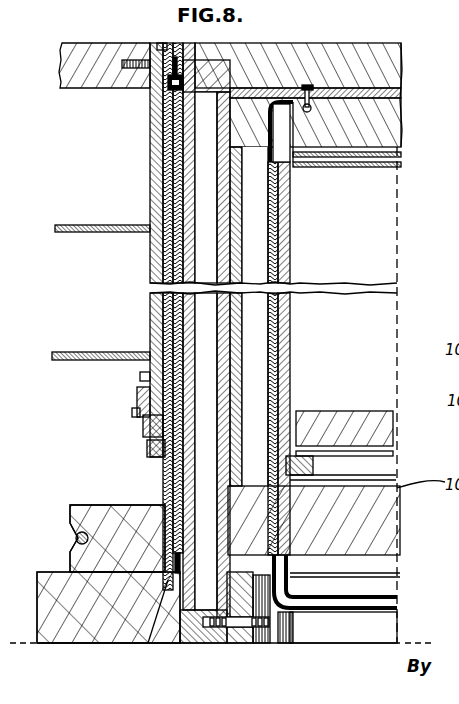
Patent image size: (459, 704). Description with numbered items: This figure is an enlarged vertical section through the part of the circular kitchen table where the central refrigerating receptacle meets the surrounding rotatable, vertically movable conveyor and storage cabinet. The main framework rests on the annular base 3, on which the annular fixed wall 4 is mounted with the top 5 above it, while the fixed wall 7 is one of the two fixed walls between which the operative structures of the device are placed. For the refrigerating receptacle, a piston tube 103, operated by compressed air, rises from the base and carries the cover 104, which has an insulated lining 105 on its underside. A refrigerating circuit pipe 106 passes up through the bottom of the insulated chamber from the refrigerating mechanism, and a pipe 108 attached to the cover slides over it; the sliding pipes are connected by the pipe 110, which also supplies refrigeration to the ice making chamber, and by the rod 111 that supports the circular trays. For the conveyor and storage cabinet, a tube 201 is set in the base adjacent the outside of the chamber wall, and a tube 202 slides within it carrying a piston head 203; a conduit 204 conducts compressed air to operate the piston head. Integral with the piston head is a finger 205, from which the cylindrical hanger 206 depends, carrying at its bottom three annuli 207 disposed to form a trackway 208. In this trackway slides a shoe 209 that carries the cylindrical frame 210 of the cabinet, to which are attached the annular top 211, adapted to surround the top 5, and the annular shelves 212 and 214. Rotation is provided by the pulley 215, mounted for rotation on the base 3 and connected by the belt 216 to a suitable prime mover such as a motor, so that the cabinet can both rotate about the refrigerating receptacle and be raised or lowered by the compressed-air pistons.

The annular base 3 is at (83, 643).
The annular fixed wall 4 is at (148, 643).
The top 5 is at (291, 45).
The fixed wall 7 is at (162, 43).
The piston tube 103 is at (427, 343).
The cover 104 is at (402, 97).
The insulated lining 105 is at (392, 118).
The refrigerating circuit pipe 106 is at (397, 602).
The pipe 108 is at (292, 240).
The pipe 110 is at (357, 170).
The rod 111 is at (392, 467).
The tube 201 is at (186, 643).
The tube 202 is at (193, 486).
The piston head 203 is at (210, 58).
The conduit 204 is at (245, 627).
The finger 205 is at (161, 45).
The cylindrical hanger 206 is at (151, 117).
The annulus 207 is at (147, 442).
The trackway 208 is at (133, 412).
The shoe 209 is at (142, 375).
The cylindrical frame 210 is at (151, 180).
The annular top 211 is at (80, 45).
The annular shelf 212 is at (85, 233).
The annular shelf 214 is at (84, 352).
The pulley 215 is at (95, 505).
The belt 216 is at (76, 538).